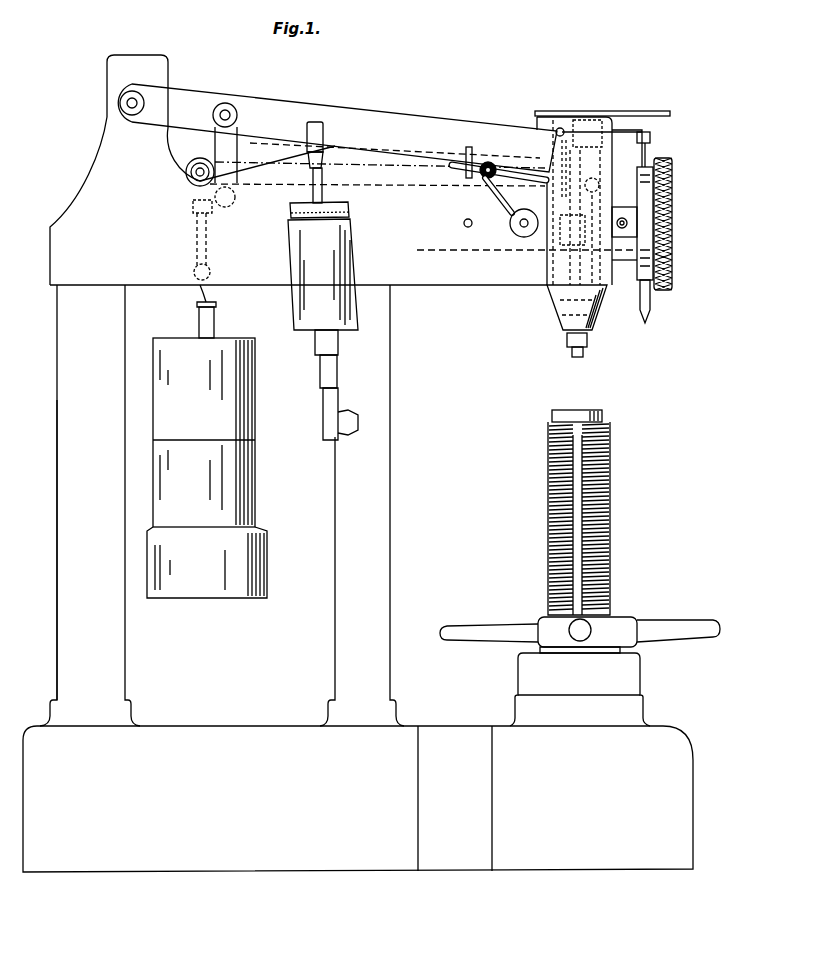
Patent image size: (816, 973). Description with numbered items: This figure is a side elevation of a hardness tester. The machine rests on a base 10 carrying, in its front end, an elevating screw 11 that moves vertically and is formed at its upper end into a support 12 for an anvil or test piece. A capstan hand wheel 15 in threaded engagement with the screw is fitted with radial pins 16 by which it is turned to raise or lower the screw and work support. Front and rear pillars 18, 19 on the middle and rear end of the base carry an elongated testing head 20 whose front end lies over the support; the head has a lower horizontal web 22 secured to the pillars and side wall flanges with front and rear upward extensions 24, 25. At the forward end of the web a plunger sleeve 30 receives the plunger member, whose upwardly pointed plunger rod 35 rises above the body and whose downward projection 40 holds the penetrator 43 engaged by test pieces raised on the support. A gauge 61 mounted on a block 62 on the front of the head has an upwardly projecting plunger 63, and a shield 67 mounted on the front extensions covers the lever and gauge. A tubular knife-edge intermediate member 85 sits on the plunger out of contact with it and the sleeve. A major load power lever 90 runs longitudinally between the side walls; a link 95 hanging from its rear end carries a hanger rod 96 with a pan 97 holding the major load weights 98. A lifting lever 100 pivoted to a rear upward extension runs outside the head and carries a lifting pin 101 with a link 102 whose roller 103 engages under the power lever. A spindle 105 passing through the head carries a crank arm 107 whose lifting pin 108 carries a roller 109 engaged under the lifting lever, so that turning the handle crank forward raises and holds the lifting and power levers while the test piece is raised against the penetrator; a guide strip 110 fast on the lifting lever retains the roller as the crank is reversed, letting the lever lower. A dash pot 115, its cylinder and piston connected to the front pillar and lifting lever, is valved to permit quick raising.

The base 10 is at (462, 725).
The elevating screw 11 is at (548, 513).
The support 12 is at (552, 412).
The capstan hand wheel 15 is at (535, 617).
The radial pins 16 is at (470, 607).
The front pillar 18 is at (387, 383).
The rear pillar 19 is at (125, 640).
The testing head 20 is at (167, 287).
The lower horizontal web 22 is at (467, 252).
The rear upward extension 24 is at (145, 55).
The front upward extension 25 is at (605, 120).
The plunger sleeve 30 is at (597, 307).
The plunger rod 35 is at (573, 143).
The downward projection 40 is at (588, 343).
The penetrator 43 is at (572, 353).
The gauge 61 is at (640, 192).
The block 62 is at (624, 233).
The plunger 63 is at (652, 147).
The shield 67 is at (660, 112).
The intermediate member 85 is at (567, 208).
The major load power lever 90 is at (248, 165).
The link 95 is at (192, 195).
The hanger rod 96 is at (197, 233).
The pan 97 is at (268, 570).
The major load weights 98 is at (257, 460).
The lifting lever 100 is at (188, 95).
The lifting pin 101 is at (227, 103).
The link 102 is at (217, 142).
The roller 103 is at (235, 193).
The spindle 105 is at (523, 237).
The crank arm 107 is at (497, 197).
The lifting pin 108 is at (468, 160).
The roller 109 is at (463, 176).
The guide strip 110 is at (450, 170).
The dash pot 115 is at (360, 262).